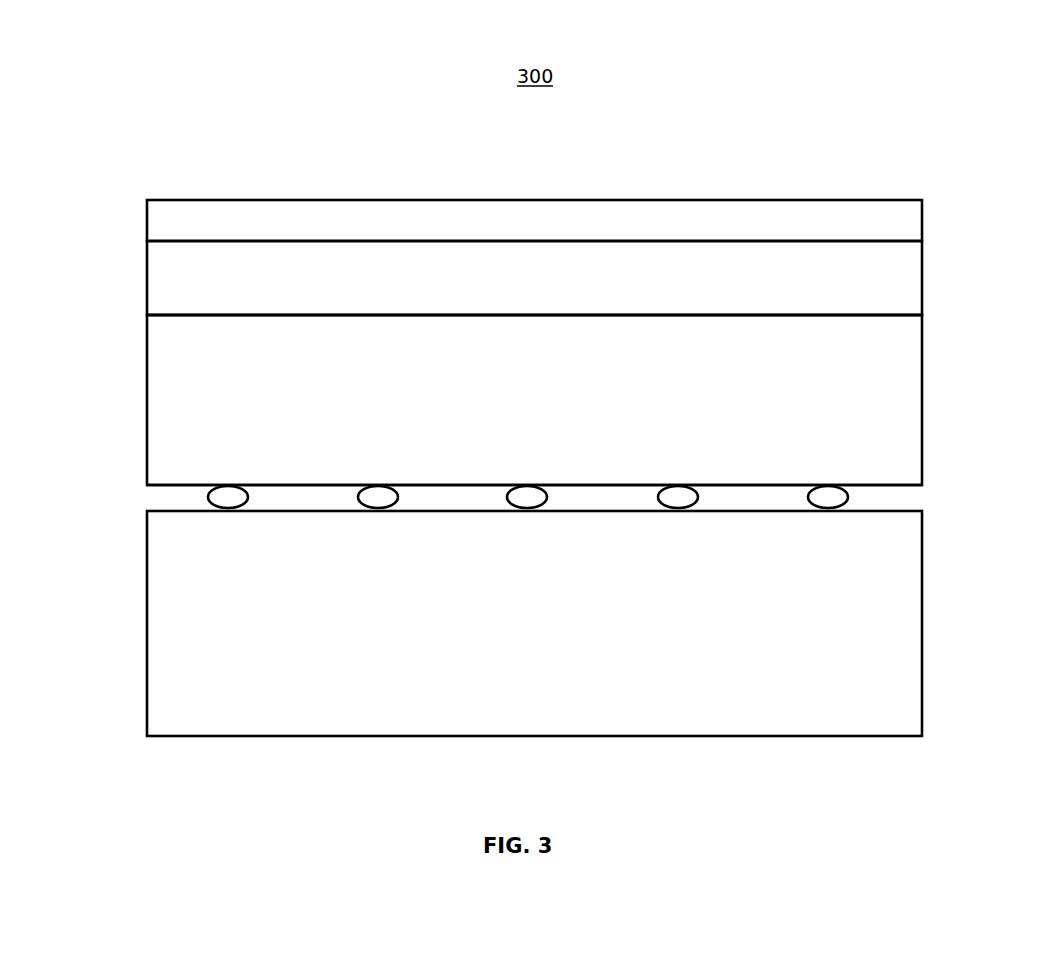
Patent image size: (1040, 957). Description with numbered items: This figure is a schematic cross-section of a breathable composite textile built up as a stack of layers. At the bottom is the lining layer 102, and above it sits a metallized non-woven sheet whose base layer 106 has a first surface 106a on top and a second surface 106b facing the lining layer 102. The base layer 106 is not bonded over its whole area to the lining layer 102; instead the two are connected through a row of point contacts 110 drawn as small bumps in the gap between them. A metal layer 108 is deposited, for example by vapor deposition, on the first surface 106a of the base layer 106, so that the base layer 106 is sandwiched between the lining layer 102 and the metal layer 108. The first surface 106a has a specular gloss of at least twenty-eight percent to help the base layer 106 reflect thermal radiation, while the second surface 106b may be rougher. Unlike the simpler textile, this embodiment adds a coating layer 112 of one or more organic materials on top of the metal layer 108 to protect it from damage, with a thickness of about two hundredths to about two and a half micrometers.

The lining layer 102 is at (922, 645).
The base layer 106 is at (922, 382).
The first surface 106a is at (173, 315).
The second surface 106b is at (175, 486).
The metal layer 108 is at (922, 268).
The point contacts 110 is at (847, 494).
The coating layer 112 is at (922, 200).